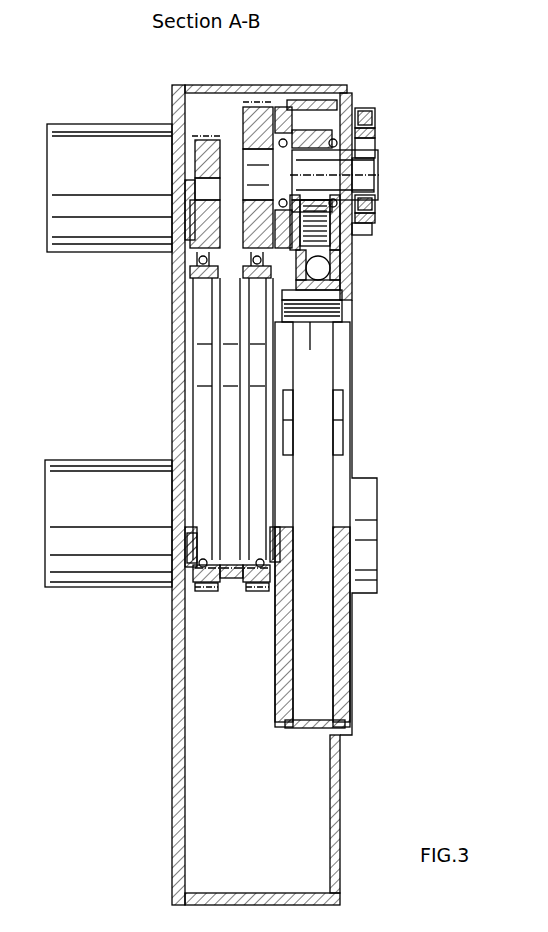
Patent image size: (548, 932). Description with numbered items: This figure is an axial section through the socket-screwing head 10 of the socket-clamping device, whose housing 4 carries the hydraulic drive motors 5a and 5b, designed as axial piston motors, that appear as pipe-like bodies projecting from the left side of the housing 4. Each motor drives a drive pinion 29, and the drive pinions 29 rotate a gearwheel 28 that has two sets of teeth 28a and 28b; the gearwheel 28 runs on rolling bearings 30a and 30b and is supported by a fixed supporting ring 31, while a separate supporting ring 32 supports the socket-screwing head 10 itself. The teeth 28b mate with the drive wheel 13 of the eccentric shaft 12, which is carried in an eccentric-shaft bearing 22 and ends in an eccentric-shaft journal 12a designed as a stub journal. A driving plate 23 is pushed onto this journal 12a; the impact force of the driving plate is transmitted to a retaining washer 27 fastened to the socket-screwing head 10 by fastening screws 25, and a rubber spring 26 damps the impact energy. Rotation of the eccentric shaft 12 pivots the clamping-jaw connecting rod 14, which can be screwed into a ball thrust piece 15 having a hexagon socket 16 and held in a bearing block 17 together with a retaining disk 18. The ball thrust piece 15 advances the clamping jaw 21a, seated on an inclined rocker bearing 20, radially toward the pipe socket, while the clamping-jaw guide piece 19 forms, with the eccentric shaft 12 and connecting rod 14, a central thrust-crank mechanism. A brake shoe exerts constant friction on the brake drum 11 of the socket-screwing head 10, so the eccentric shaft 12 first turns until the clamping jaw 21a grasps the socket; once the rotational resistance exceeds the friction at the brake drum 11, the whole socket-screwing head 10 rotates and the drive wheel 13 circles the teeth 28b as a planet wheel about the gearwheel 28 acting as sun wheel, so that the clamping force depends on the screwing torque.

The housing 4 is at (298, 86).
The hydraulic drive motor 5a is at (100, 124).
The hydraulic drive motor 5b is at (92, 460).
The socket-screwing head 10 is at (345, 676).
The brake drum 11 is at (305, 735).
The eccentric shaft 12 is at (298, 168).
The eccentric-shaft journal 12a is at (370, 170).
The drive wheel 13 is at (243, 125).
The clamping-jaw connecting rod 14 is at (322, 130).
The ball thrust piece 15 is at (328, 266).
The hexagon socket 16 is at (335, 302).
The bearing block 17 is at (340, 274).
The retaining disk 18 is at (355, 250).
The clamping-jaw guide piece 19 is at (344, 292).
The inclined rocker bearing 20 is at (318, 322).
The clamping jaw 21a is at (330, 335).
The eccentric-shaft bearing 22 is at (352, 106).
The driving plate 23 is at (372, 140).
The fastening screw 25 is at (372, 218).
The rubber spring 26 is at (365, 232).
The retaining washer 27 is at (366, 152).
The gearwheel 28 is at (226, 580).
The teeth of the gearwheel 28a is at (205, 592).
The teeth of the gearwheel 28b is at (250, 592).
The drive pinion 29 is at (186, 232).
The rolling bearing 30a is at (195, 256).
The rolling bearing 30b is at (250, 272).
The fixed supporting ring 31 is at (180, 560).
The supporting ring 32 is at (280, 556).